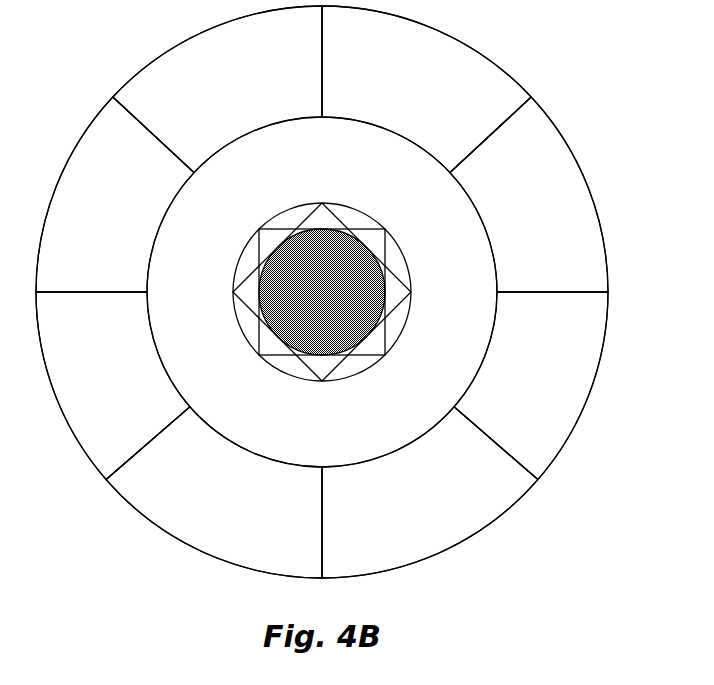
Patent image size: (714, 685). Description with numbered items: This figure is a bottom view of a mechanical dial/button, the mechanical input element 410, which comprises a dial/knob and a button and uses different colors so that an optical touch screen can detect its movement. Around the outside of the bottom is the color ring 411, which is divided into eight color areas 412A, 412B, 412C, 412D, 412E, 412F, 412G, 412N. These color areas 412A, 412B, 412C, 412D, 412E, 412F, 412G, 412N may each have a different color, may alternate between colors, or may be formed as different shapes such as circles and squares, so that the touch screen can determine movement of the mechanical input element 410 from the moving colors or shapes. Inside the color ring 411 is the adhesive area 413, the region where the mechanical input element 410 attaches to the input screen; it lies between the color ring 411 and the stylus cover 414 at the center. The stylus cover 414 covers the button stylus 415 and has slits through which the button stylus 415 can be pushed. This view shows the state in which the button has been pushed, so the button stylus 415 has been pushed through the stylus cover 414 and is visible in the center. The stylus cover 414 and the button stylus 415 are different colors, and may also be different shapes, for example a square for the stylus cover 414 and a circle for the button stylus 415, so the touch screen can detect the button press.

The mechanical input element 410 is at (500, 63).
The color ring 411 is at (565, 200).
The color area 412N is at (426, 89).
The color area 412A is at (529, 194).
The color area 412B is at (531, 386).
The color area 412C is at (430, 492).
The color area 412D is at (214, 492).
The color area 412E is at (113, 386).
The color area 412F is at (115, 194).
The color area 412G is at (217, 89).
The adhesive area 413 is at (265, 190).
The stylus cover 414 is at (387, 267).
The button stylus 415 is at (292, 297).